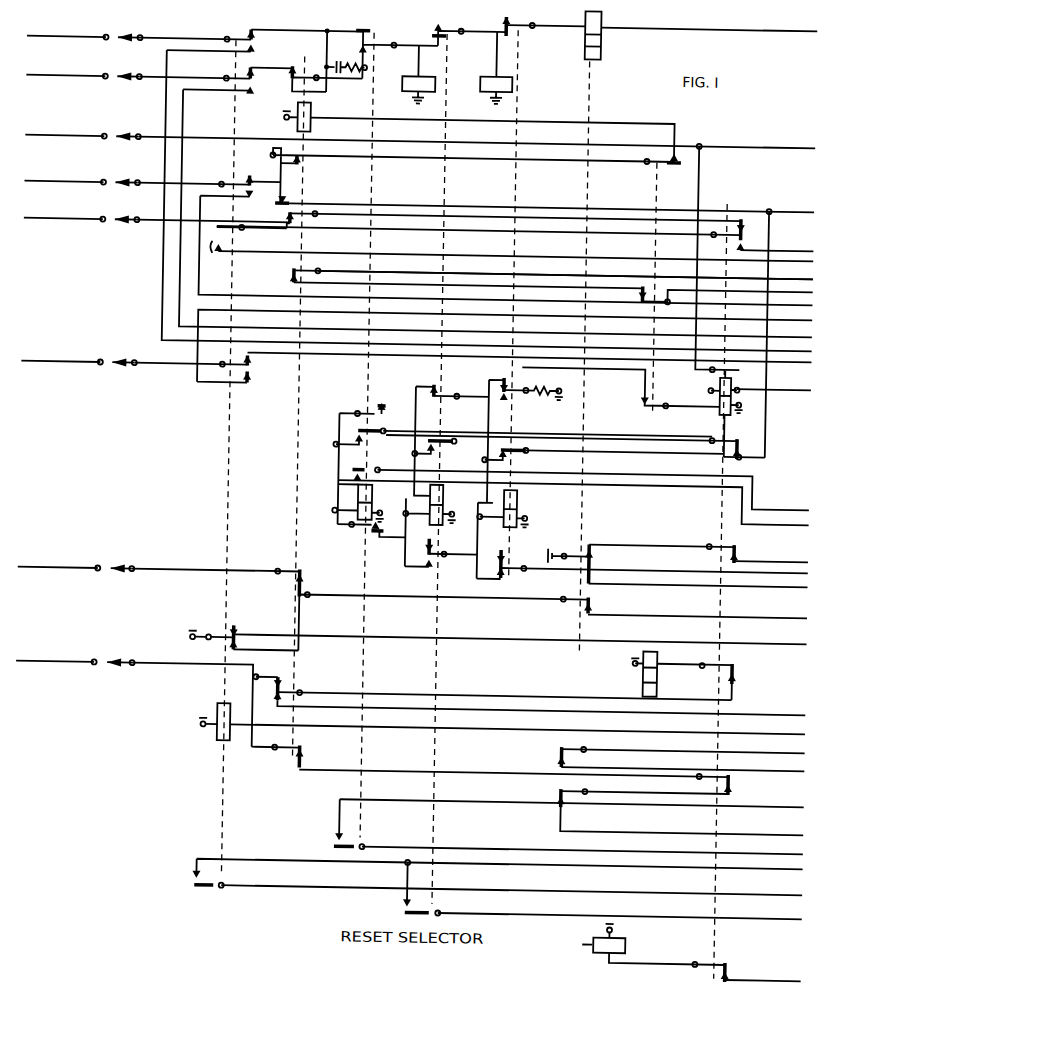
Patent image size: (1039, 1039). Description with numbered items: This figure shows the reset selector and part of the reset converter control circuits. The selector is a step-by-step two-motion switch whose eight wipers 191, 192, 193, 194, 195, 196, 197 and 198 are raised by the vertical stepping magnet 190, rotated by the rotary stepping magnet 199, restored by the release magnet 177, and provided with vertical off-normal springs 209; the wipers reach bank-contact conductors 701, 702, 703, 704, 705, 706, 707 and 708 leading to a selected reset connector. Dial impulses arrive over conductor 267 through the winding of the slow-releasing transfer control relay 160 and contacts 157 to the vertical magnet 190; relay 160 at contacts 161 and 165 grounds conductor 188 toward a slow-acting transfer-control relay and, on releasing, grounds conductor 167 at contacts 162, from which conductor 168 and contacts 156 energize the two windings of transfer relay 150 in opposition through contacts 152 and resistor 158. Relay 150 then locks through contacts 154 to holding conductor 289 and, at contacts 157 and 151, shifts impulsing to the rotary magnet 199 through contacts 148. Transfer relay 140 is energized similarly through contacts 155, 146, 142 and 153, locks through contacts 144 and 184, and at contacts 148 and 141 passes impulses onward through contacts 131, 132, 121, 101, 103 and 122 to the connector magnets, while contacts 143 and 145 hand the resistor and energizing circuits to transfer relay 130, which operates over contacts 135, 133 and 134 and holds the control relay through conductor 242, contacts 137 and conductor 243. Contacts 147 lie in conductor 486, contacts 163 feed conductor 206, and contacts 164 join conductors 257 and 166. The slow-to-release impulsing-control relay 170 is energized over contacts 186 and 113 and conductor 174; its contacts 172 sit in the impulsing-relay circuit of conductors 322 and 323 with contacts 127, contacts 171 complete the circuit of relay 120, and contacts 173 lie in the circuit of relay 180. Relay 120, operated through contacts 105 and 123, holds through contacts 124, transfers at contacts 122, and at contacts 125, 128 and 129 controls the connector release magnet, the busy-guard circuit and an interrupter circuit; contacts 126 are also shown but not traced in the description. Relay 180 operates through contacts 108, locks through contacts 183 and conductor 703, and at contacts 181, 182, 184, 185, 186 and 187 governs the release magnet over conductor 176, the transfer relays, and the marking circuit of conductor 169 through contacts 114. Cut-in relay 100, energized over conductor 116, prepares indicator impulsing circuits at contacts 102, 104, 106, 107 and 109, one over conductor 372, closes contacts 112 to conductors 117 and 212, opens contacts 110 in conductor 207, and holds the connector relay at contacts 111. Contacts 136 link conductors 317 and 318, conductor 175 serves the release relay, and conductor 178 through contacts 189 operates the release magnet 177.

The cut-in relay 100 is at (222, 708).
The contacts 101 is at (237, 32).
The contacts 102 is at (246, 47).
The contacts 103 is at (238, 76).
The contacts 104 is at (497, 213).
The contacts 105 is at (234, 186).
The contacts 106 is at (234, 196).
The contacts 107 is at (508, 255).
The contacts 108 is at (237, 367).
The contacts 109 is at (250, 380).
The contacts 110 is at (228, 632).
The contacts 111 is at (228, 650).
The contacts 112 is at (190, 888).
The contacts 113 is at (278, 702).
The contacts 114 is at (305, 756).
The conductor 116 is at (771, 726).
The conductor 117 is at (770, 891).
The relay 120 is at (306, 117).
The contacts 121 is at (289, 73).
The contacts 122 is at (255, 88).
The contacts 123 is at (446, 179).
The contacts 124 is at (298, 167).
The contacts 125 is at (306, 202).
The contact 126 is at (283, 218).
The contacts 127 is at (280, 274).
The contacts 128 is at (298, 586).
The contacts 129 is at (288, 688).
The transfer relay 130 is at (366, 503).
The contacts 131 is at (368, 32).
The contacts 132 is at (369, 55).
The contacts 133 is at (372, 408).
The contacts 134 is at (356, 440).
The contacts 135 is at (362, 540).
The contacts 136 is at (344, 846).
The contacts 137 is at (352, 484).
The transfer relay 140 is at (438, 476).
The contacts 141 is at (436, 44).
The contacts 142 is at (436, 392).
The contacts 143 is at (436, 405).
The contacts 144 is at (436, 453).
The contacts 145 is at (434, 552).
The contacts 146 is at (434, 564).
The contacts 147 is at (408, 913).
The contacts 148 is at (432, 33).
The transfer relay 150 is at (517, 498).
The contacts 151 is at (510, 34).
The contacts 152 is at (507, 382).
The contacts 153 is at (503, 397).
The contacts 154 is at (506, 457).
The contacts 155 is at (501, 557).
The contacts 156 is at (502, 574).
The contacts 157 is at (506, 22).
The resistor 158 is at (544, 388).
The slow-releasing transfer control relay 160 is at (594, 35).
The contacts 161 is at (580, 542).
The contacts 162 is at (594, 559).
The contacts 163 is at (590, 603).
The contacts 164 is at (558, 748).
The contacts 165 is at (558, 792).
The conductor 166 is at (771, 757).
The conductor 167 is at (761, 586).
The conductor 168 is at (804, 578).
The conductor 169 is at (770, 823).
The slow-to-release impulsing-control relay 170 is at (642, 683).
The contacts 171 is at (678, 166).
The contacts 172 is at (634, 299).
The contacts 173 is at (638, 398).
The conductor 174 is at (771, 708).
The conductor 175 is at (808, 383).
The conductor 176 is at (808, 242).
The release magnet 177 is at (602, 959).
The conductor 178 is at (770, 970).
The relay 180 is at (704, 390).
The contacts 181 is at (745, 228).
The contacts 182 is at (730, 240).
The contacts 183 is at (702, 368).
The contacts 184 is at (752, 420).
The contacts 185 is at (716, 554).
The contacts 186 is at (739, 672).
The contacts 187 is at (736, 777).
The conductor 188 is at (804, 554).
The contacts 189 is at (718, 967).
The vertical stepping magnet 190 is at (466, 98).
The wiper 191 is at (121, 40).
The wiper 192 is at (121, 79).
The wiper 193 is at (121, 137).
The wiper 194 is at (121, 185).
The wiper 195 is at (121, 221).
The wiper 196 is at (121, 364).
The wiper 197 is at (121, 563).
The wiper 198 is at (121, 658).
The rotary stepping magnet 199 is at (394, 96).
The conductor 206 is at (772, 607).
The conductor 207 is at (766, 633).
The vertical off-normal springs 209 is at (794, 141).
The conductor 212 is at (754, 874).
The conductor 242 is at (800, 525).
The conductor 243 is at (804, 503).
The conductor 257 is at (771, 741).
The conductor 267 is at (794, 21).
The holding conductor 289 is at (808, 204).
The conductor 317 is at (770, 848).
The conductor 318 is at (770, 797).
The conductor 322 is at (804, 290).
The conductor 323 is at (808, 273).
The conductor 372 is at (758, 310).
The conductor 486 is at (770, 911).
The conductor 701 is at (62, 38).
The conductor 702 is at (62, 76).
The conductor 703 is at (62, 134).
The conductor 704 is at (62, 183).
The conductor 705 is at (62, 220).
The conductor 706 is at (58, 364).
The conductor 707 is at (58, 569).
The conductor 708 is at (56, 664).